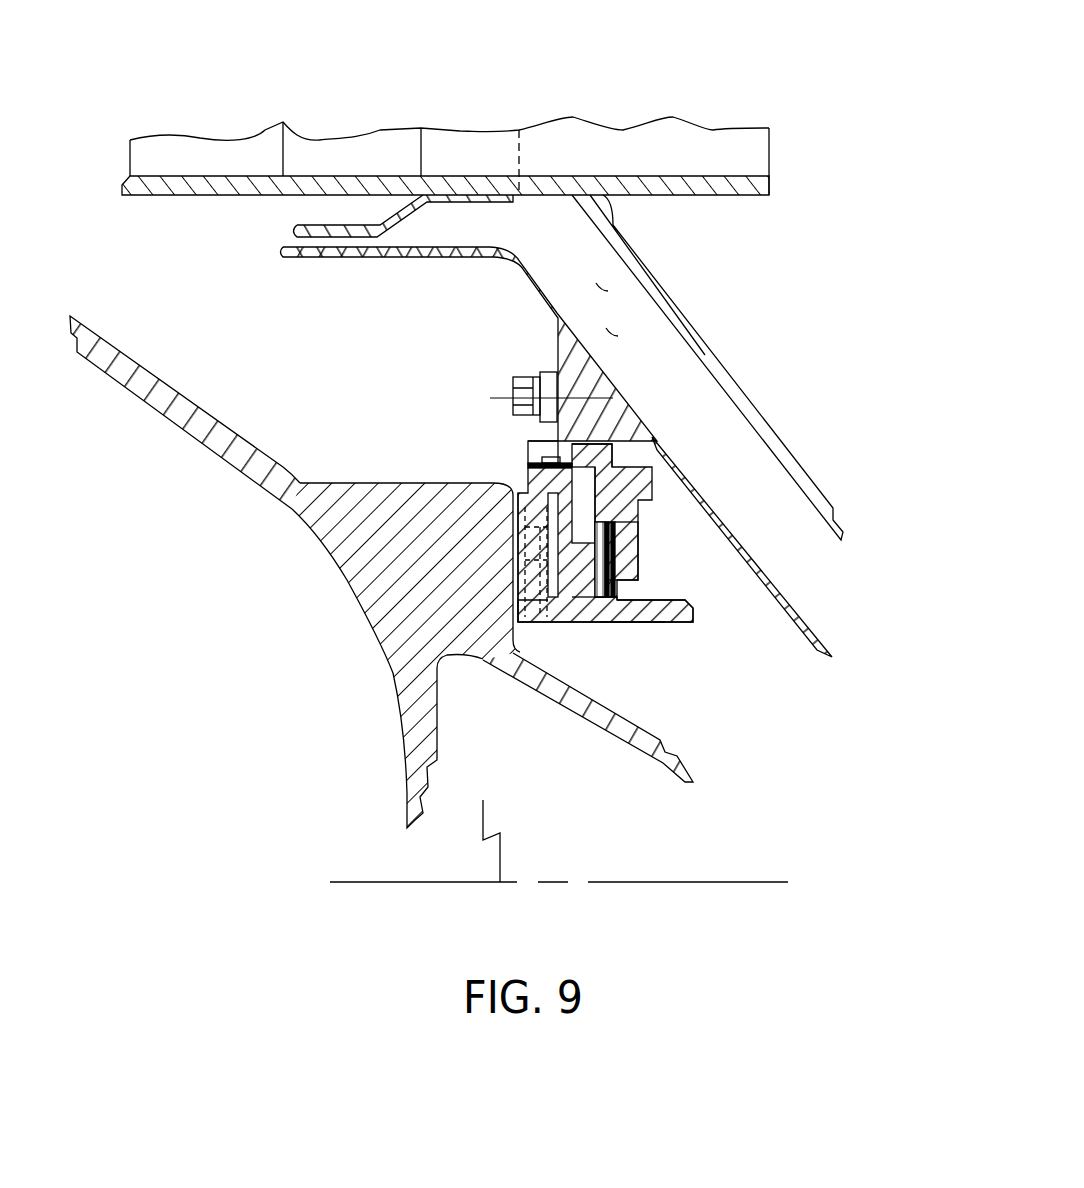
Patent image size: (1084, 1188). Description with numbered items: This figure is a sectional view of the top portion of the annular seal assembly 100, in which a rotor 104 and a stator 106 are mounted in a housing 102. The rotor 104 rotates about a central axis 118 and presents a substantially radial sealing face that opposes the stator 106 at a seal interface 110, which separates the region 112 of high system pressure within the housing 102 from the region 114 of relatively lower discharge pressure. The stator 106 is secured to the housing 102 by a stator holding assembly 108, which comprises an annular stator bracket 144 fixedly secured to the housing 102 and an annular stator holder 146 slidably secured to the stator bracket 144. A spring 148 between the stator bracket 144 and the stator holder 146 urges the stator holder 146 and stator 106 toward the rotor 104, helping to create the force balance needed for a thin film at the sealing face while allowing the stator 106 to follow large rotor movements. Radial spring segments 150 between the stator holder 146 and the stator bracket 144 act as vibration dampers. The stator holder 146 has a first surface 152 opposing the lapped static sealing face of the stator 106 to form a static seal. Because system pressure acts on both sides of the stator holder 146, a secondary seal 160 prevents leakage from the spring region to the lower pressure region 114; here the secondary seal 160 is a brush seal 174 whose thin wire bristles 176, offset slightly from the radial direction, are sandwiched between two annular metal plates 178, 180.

The seal assembly 100 is at (408, 100).
The housing 102 is at (608, 404).
The rotor 104 is at (393, 482).
The stator 106 is at (530, 617).
The stator holding assembly 108 is at (652, 633).
The seal interface 110 is at (510, 475).
The region of high pressure 112 is at (297, 340).
The region of relatively lower pressure 114 is at (777, 746).
The central axis 118 is at (648, 882).
The stator bracket 144 is at (585, 520).
The stator holder 146 is at (677, 622).
The spring 148 is at (573, 598).
The radial spring segments 150 is at (547, 458).
The first surface 152 is at (583, 512).
The secondary seal 160 is at (672, 580).
The brush seal 174 is at (605, 597).
The bristles 176 is at (633, 623).
The annular metal plate 178 is at (616, 545).
The annular metal plate 180 is at (608, 530).